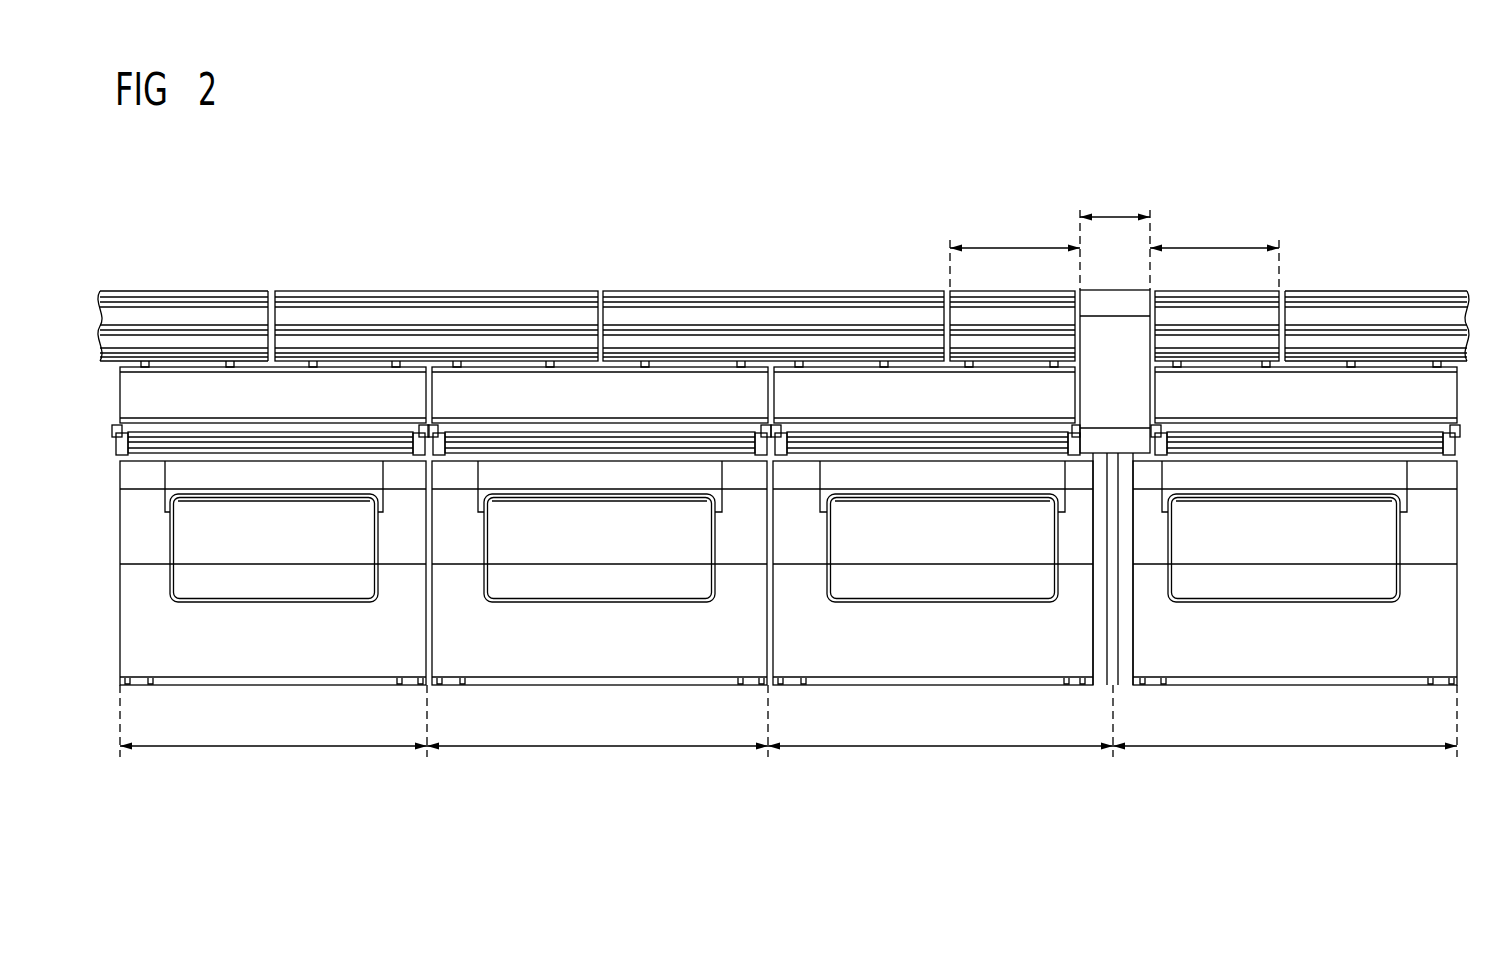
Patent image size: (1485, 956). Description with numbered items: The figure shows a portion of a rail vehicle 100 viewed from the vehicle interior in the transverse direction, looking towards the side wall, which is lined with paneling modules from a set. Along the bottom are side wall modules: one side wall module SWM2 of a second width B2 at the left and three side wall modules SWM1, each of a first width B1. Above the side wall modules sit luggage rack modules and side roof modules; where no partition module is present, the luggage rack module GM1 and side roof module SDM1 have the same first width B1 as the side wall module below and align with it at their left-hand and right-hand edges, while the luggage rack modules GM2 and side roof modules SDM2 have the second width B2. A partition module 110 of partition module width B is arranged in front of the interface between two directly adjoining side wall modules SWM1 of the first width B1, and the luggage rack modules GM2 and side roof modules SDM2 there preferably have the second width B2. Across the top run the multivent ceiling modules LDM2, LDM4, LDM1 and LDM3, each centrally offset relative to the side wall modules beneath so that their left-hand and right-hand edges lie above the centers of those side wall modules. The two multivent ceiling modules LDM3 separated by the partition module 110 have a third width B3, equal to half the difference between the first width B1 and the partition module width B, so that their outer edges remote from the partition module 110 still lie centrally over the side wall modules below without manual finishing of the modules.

The rail vehicle 100 is at (788, 488).
The partition module 110 is at (1115, 325).
The multivent ceiling module LDM1 is at (768, 291).
The multivent ceiling module LDM2 is at (185, 291).
The multivent ceiling module LDM3 is at (995, 291).
The multivent ceiling module LDM4 is at (455, 291).
The side roof module SDM1 is at (572, 380).
The side roof module SDM2 is at (330, 380).
The luggage rack module GM1 is at (667, 420).
The luggage rack module GM2 is at (303, 420).
The side wall module SWM1 is at (675, 686).
The side wall module SWM2 is at (334, 686).
The partition module width B is at (1115, 233).
The first width B1 is at (942, 721).
The second width B2 is at (273, 721).
The third width B3 is at (1114, 251).